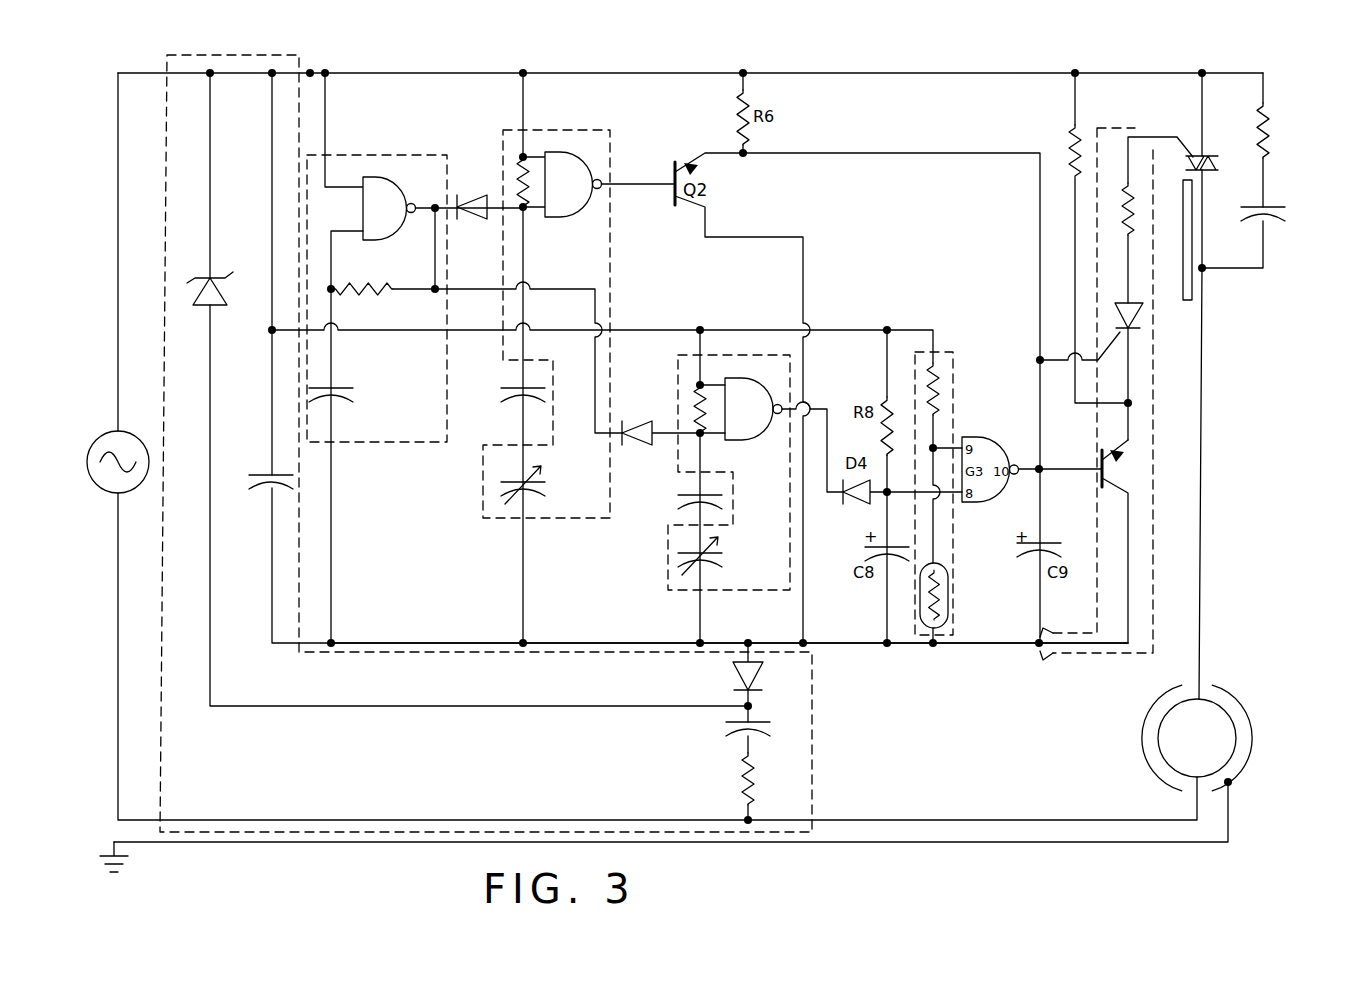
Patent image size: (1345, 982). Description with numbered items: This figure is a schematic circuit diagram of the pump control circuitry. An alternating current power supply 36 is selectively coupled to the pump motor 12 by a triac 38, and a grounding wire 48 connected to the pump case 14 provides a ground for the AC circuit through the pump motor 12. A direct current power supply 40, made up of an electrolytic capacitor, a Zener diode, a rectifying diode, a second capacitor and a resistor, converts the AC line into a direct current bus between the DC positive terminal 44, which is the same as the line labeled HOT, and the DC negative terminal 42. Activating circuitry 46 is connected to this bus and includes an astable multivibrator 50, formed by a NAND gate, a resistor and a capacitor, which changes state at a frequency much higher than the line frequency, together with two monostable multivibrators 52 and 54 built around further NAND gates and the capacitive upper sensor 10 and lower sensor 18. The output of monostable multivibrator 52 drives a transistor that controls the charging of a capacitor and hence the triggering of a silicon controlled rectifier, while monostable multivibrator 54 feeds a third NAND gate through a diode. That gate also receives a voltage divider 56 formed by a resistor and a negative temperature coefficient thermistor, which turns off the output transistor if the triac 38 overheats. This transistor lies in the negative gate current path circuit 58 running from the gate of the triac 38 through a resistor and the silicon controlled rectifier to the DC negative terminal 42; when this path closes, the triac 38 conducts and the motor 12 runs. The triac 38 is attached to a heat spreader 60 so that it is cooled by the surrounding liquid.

The upper sensor 10 is at (498, 497).
The pump motor 12 is at (1205, 692).
The pump case 14 is at (1145, 757).
The lower sensor 18 is at (673, 570).
The alternating current power supply 36 is at (100, 438).
The triac 38 is at (1212, 160).
The direct current power supply 40 is at (813, 743).
The DC negative terminal 42 is at (748, 643).
The DC positive terminal 44 is at (310, 73).
The activating circuitry 46 is at (839, 64).
The grounding wire 48 is at (1228, 813).
The astable multivibrator 50 is at (420, 155).
The monostable multivibrator 52 is at (583, 130).
The monostable multivibrator 54 is at (678, 380).
The voltage divider 56 is at (953, 352).
The negative gate current path circuit 58 is at (1100, 128).
The heat spreader 60 is at (1183, 268).